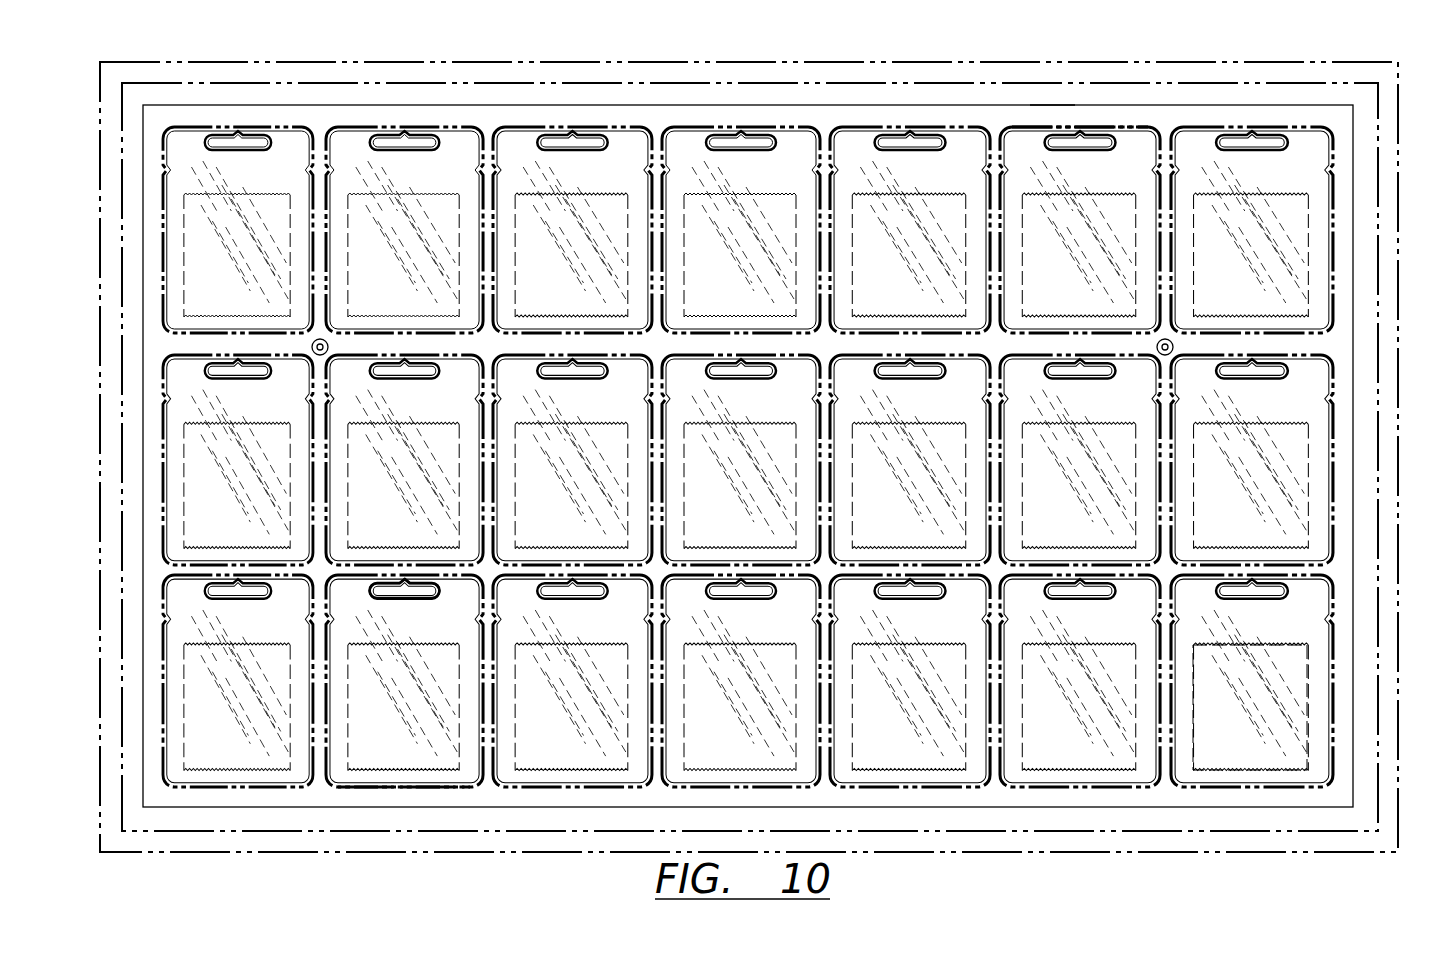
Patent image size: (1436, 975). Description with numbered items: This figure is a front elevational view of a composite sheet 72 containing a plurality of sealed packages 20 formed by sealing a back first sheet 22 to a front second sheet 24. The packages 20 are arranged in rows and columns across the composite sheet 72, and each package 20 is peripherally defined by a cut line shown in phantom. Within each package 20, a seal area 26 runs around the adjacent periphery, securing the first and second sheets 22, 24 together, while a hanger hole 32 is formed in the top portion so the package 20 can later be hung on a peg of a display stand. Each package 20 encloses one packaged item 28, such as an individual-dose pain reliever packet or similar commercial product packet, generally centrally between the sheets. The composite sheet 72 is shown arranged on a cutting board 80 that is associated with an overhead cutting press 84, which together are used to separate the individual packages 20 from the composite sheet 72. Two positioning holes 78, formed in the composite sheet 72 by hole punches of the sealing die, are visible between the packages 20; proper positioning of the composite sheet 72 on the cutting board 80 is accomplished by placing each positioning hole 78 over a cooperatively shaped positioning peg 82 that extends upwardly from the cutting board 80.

The package 20 is at (285, 164).
The first sheet 22 is at (1130, 100).
The second sheet 24 is at (1052, 116).
The seal area 26 is at (389, 788).
The item 28 is at (1230, 713).
The hanger hole 32 is at (394, 600).
The composite sheet 72 is at (1342, 331).
The positioning hole 78 is at (317, 356).
The cutting board 80 is at (1320, 58).
The positioning peg 82 is at (326, 340).
The cutting press 84 is at (1297, 80).